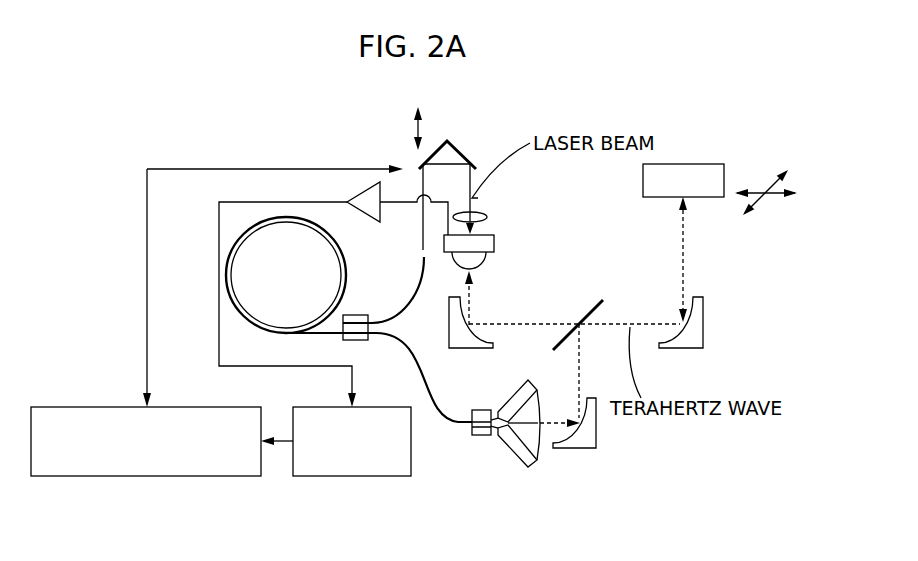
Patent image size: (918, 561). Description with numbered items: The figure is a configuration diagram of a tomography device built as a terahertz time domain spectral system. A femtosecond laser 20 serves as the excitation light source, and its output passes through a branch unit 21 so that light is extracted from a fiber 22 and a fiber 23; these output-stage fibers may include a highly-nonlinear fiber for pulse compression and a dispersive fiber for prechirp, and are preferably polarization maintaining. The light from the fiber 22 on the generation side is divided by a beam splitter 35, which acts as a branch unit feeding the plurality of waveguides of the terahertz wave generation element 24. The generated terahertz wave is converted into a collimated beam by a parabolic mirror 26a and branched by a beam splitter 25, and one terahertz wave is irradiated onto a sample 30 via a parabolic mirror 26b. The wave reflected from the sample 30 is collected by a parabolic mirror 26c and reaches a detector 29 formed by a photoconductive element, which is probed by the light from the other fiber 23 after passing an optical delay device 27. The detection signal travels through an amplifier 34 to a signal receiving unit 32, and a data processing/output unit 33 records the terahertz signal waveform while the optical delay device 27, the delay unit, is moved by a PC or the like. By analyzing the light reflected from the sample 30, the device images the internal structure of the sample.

The femtosecond laser 20 is at (283, 217).
The branch unit 21 is at (357, 315).
The fiber 22 is at (423, 372).
The fiber 23 is at (422, 268).
The terahertz wave generation element 24 is at (521, 453).
The beam splitter 25 is at (579, 313).
The parabolic mirror 26a is at (578, 449).
The parabolic mirror 26b is at (700, 327).
The parabolic mirror 26c is at (455, 335).
The optical delay device 27 is at (459, 153).
The detector 29 is at (489, 242).
The sample 30 is at (716, 164).
The signal receiving unit 32 is at (307, 477).
The data processing/output unit 33 is at (98, 477).
The amplifier 34 is at (357, 197).
The beam splitter 35 is at (477, 437).